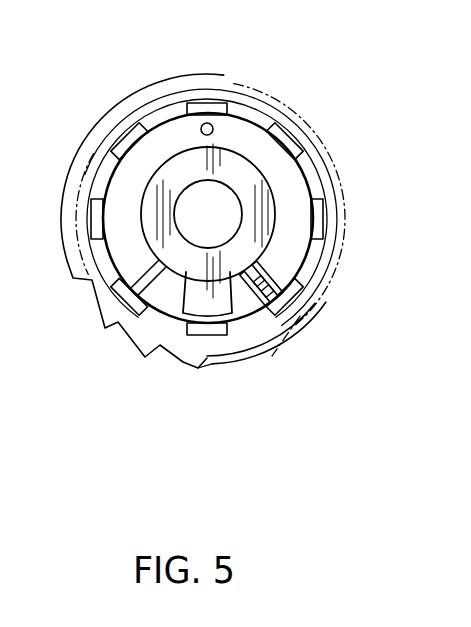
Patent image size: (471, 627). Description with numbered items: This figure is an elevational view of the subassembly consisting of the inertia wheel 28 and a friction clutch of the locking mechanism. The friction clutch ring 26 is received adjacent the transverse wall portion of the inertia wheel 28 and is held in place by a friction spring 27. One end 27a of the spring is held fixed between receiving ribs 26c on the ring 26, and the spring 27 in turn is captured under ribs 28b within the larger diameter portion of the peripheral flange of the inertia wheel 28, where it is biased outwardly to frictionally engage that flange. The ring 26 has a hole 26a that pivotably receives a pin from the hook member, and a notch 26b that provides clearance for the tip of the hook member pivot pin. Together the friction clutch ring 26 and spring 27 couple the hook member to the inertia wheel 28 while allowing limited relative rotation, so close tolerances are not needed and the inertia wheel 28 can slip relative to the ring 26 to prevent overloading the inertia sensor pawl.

The friction clutch ring 26 is at (293, 270).
The hole 26a is at (207, 122).
The notch 26b is at (222, 300).
The receiving ribs 26c is at (280, 258).
The friction spring 27 is at (258, 113).
The end of friction spring 27a is at (250, 282).
The inertia wheel 28 is at (92, 314).
The ribs 28b is at (125, 128).